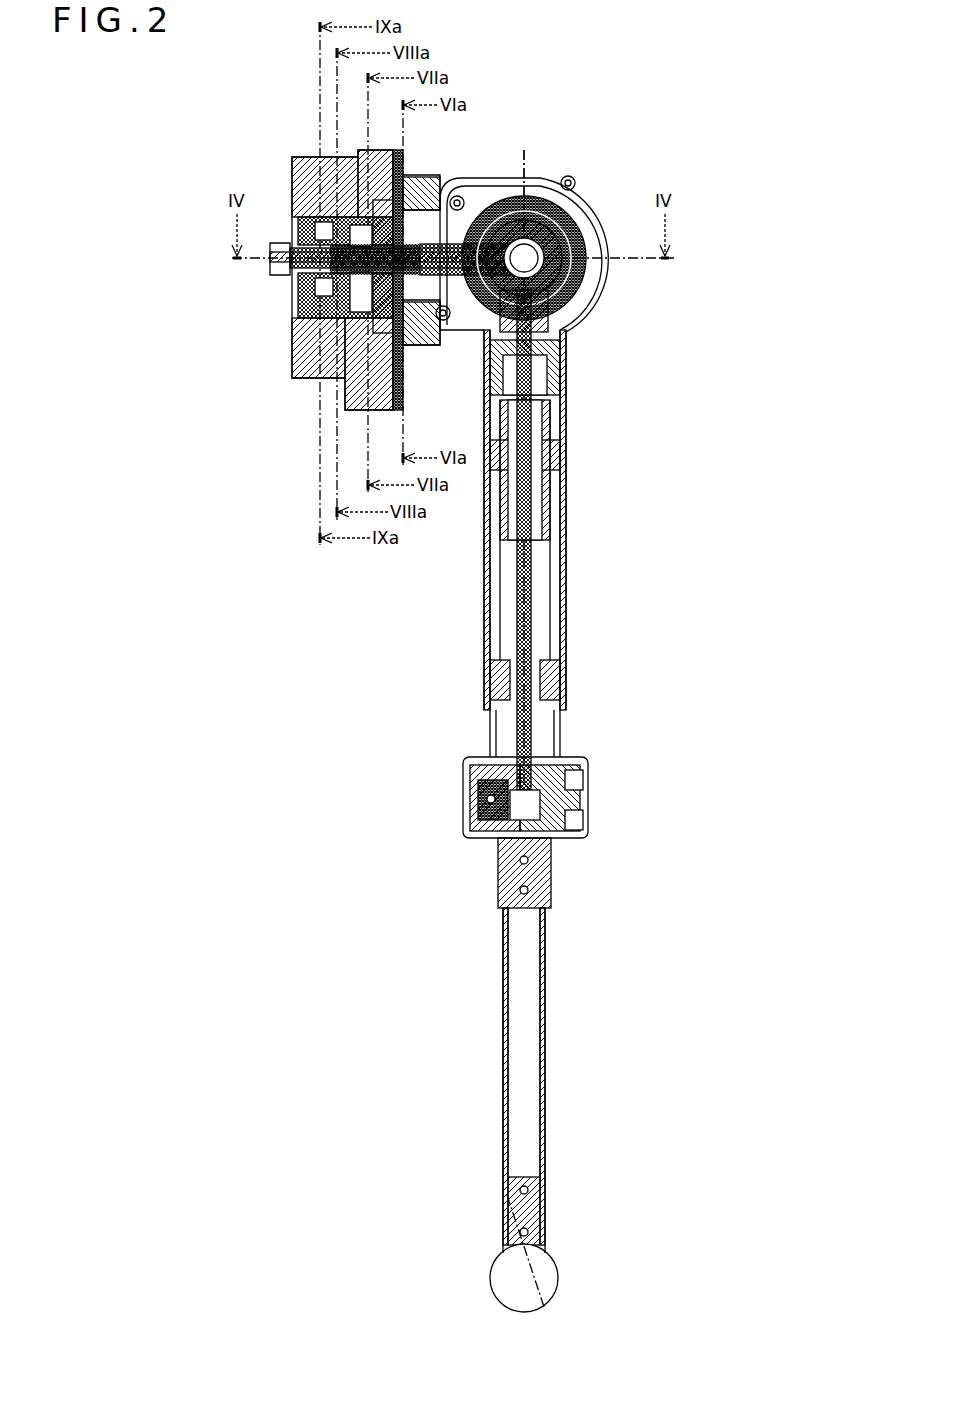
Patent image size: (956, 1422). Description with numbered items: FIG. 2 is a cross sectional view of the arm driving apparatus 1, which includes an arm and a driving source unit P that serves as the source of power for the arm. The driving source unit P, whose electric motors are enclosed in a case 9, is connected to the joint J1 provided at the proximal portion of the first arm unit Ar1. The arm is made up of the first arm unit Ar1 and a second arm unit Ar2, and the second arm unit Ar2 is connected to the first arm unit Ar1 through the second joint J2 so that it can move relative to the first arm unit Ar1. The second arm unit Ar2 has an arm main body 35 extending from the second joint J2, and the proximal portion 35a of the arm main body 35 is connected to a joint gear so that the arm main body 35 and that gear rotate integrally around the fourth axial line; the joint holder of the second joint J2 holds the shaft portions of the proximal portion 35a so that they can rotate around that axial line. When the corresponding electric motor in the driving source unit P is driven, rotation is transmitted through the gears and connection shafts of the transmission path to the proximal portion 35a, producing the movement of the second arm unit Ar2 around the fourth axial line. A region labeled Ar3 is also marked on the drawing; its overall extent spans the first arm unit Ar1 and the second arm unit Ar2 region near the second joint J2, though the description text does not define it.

The arm driving apparatus 1 is at (704, 90).
The joint J1 is at (586, 186).
The second joint J2 is at (480, 757).
The driving source unit P is at (283, 313).
The case 9 is at (298, 356).
The arm main body 35 is at (513, 979).
The proximal portion 35a is at (515, 858).
The first arm unit Ar1 is at (590, 175).
The second arm unit Ar2 is at (704, 712).
The arm region Ar3 is at (779, 447).